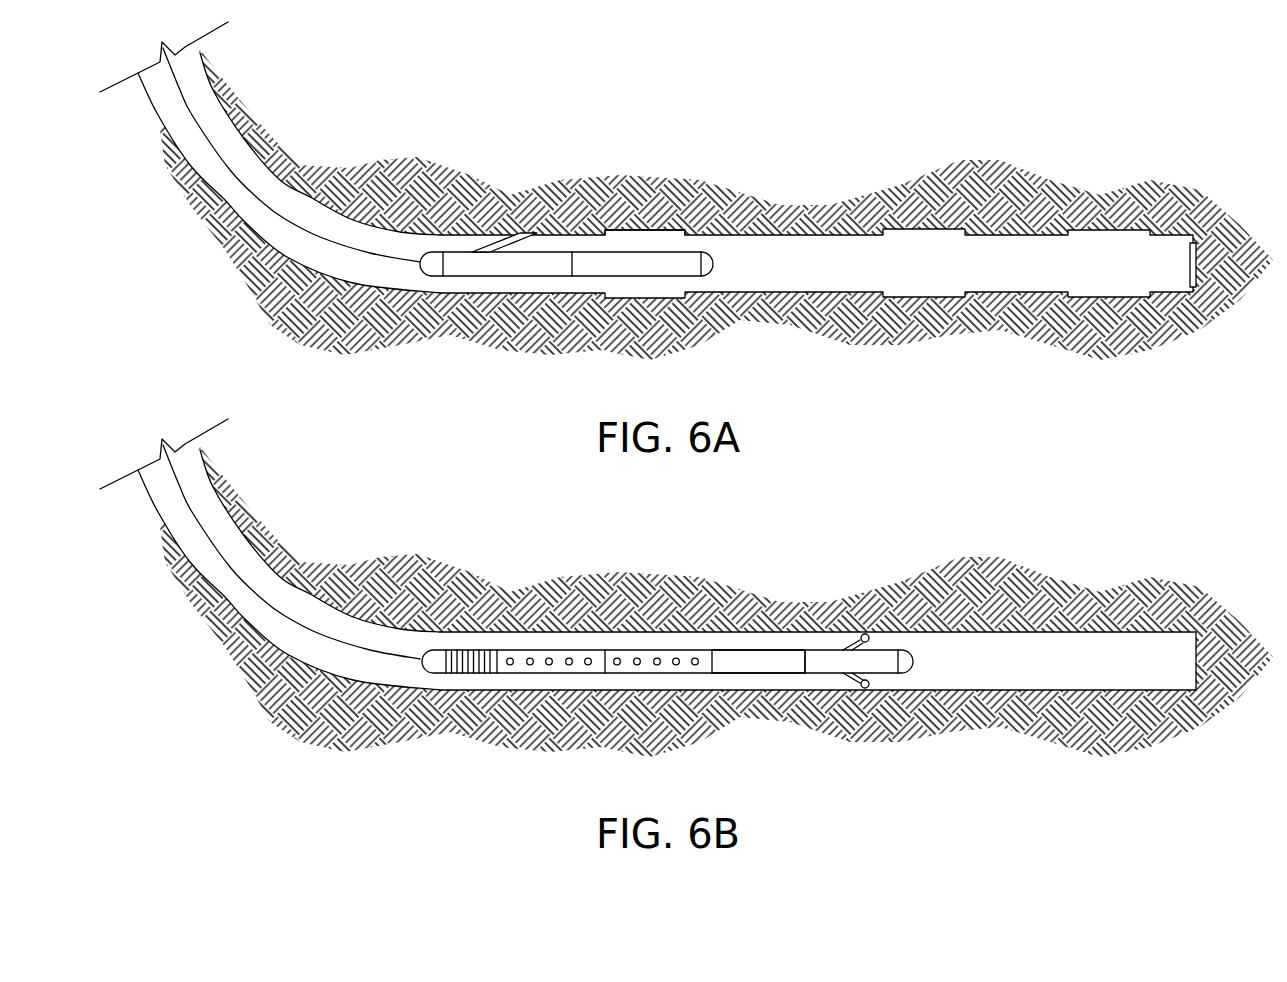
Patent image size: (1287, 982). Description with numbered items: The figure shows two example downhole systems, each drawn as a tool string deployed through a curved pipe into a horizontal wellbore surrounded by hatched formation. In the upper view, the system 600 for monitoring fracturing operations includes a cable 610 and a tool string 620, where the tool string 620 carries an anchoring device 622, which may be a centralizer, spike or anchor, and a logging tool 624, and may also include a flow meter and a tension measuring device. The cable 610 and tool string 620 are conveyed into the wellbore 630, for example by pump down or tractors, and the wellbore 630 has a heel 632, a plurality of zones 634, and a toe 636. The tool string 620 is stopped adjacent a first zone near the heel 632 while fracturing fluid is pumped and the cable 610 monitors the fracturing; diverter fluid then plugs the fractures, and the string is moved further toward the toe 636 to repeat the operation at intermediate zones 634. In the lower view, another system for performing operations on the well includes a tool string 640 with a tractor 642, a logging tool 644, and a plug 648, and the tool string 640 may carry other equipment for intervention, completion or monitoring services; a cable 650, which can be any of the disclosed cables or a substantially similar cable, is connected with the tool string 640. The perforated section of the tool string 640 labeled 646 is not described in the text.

In FIG. 6A, the system 600 is at (686, 215).
In FIG. 6A, the cable 610 is at (282, 200).
In FIG. 6A, the tool string 620 is at (510, 284).
In FIG. 6A, the anchoring device 622 is at (530, 228).
In FIG. 6A, the logging tool 624 is at (668, 263).
In FIG. 6A, the wellbore 630 is at (785, 287).
In FIG. 6A, the heel 632 is at (292, 268).
In FIG. 6A, the zones 634 is at (661, 224).
In FIG. 6A, the toe 636 is at (1190, 254).
In FIG. 6B, the tool string 640 is at (780, 637).
In FIG. 6B, the tractor 642 is at (882, 666).
In FIG. 6B, the logging tool 644 is at (775, 666).
In FIG. 6B, the perforations 646 is at (548, 667).
In FIG. 6B, the plug 648 is at (482, 650).
In FIG. 6B, the cable 650 is at (275, 600).